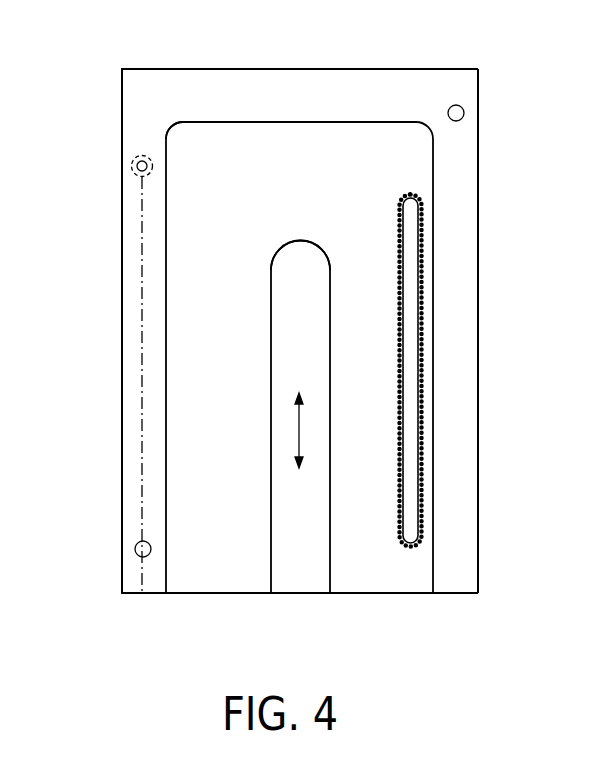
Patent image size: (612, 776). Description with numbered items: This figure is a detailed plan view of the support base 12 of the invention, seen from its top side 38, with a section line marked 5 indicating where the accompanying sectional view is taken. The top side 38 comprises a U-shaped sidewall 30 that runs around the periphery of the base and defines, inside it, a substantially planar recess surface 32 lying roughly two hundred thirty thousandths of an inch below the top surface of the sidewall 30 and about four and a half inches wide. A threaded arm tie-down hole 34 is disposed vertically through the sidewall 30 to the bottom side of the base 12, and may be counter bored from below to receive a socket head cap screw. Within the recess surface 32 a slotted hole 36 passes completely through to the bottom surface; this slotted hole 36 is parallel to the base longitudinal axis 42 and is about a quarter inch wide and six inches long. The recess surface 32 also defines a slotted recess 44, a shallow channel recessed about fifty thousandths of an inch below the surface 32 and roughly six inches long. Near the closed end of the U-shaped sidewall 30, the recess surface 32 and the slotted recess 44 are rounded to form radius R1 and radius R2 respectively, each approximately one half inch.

The support base 12 is at (535, 46).
The U-shaped sidewall 30 is at (461, 268).
The recess surface 32 is at (245, 569).
The arm tie-down hole 34 is at (139, 172).
The slotted hole 36 is at (409, 488).
The top side 38 is at (308, 93).
The base longitudinal axis 42 is at (311, 430).
The slotted recess 44 is at (300, 369).
The radius R1 is at (172, 129).
The radius R2 is at (285, 248).
The section line 5- 5 is at (134, 636).